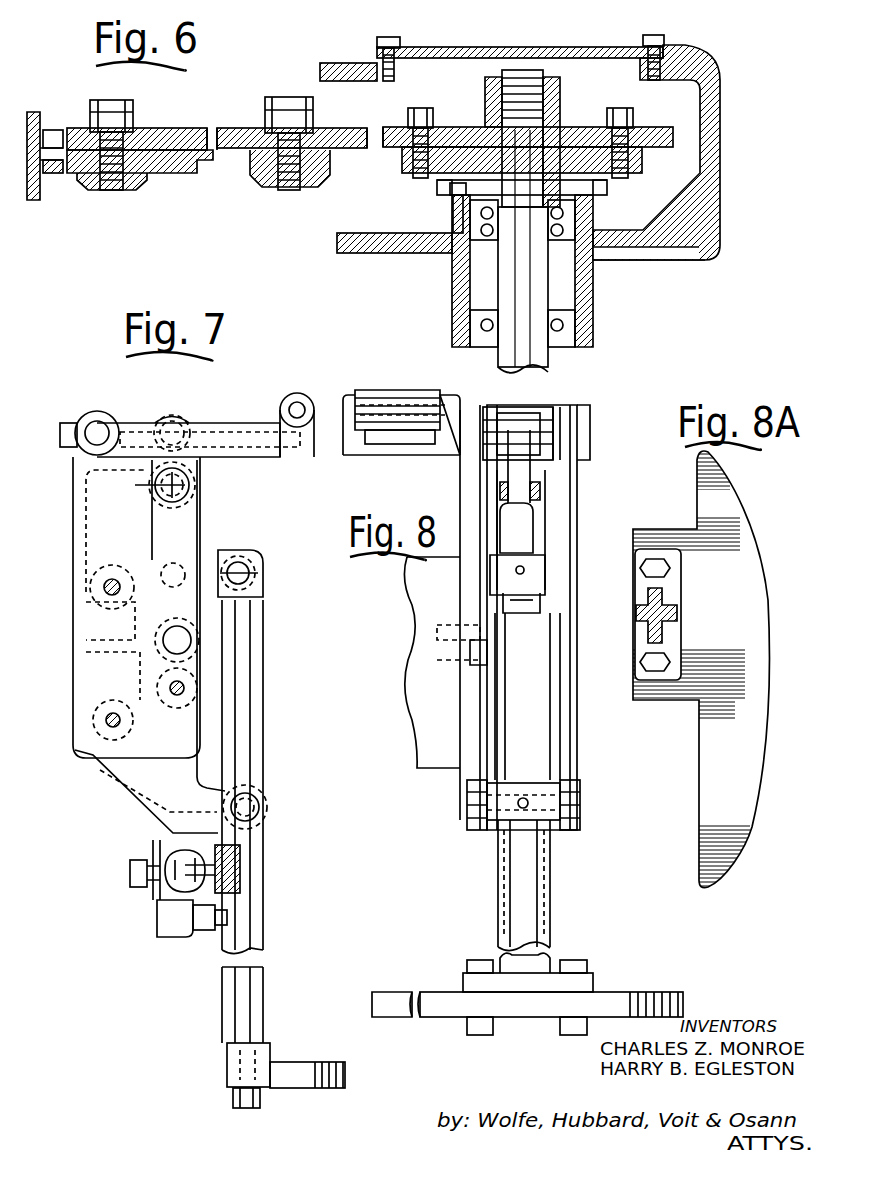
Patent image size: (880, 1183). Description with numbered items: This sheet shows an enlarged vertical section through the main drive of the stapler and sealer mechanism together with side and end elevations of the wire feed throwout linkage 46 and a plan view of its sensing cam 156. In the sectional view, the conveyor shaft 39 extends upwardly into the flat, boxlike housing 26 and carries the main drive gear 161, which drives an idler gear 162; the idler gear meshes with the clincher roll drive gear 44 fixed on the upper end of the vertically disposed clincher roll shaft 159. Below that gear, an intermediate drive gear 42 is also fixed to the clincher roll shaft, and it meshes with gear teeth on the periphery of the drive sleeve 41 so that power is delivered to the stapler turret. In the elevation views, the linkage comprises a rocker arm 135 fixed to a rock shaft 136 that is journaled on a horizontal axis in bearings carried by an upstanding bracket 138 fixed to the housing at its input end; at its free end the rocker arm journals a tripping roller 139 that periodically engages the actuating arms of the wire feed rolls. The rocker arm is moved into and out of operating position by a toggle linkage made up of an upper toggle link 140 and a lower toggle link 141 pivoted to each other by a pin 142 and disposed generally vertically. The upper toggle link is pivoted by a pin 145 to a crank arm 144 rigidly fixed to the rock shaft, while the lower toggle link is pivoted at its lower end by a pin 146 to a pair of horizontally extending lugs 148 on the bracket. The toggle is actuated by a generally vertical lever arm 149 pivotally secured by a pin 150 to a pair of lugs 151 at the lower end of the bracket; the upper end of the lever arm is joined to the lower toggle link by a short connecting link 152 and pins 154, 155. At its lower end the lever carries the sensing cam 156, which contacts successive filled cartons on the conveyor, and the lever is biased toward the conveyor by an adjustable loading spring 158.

In FIG. 8, the housing 26 is at (420, 744).
In FIG. 6, the shaft 39 is at (522, 72).
In FIG. 6, the drive sleeve 41 is at (33, 212).
In FIG. 6, the intermediate drive gear 42 is at (176, 173).
In FIG. 6, the clincher roll drive gear 44 is at (166, 128).
In FIG. 7, the wire feed throwout linkage 46 is at (66, 521).
In FIG. 8, the wire feed throwout linkage 46 is at (588, 522).
In FIG. 7, the rocker arm 135 is at (252, 458).
In FIG. 8, the rocker arm 135 is at (368, 456).
In FIG. 7, the rock shaft 136 is at (100, 428).
In FIG. 8, the rock shaft 136 is at (460, 438).
In FIG. 7, the bracket 138 is at (77, 547).
In FIG. 8, the bracket 138 is at (575, 540).
In FIG. 7, the tripping roller 139 is at (292, 393).
In FIG. 8, the tripping roller 139 is at (377, 392).
In FIG. 7, the upper toggle link 140 is at (191, 467).
In FIG. 8, the upper toggle link 140 is at (522, 455).
In FIG. 7, the lower toggle link 141 is at (195, 524).
In FIG. 8, the lower toggle link 141 is at (547, 506).
In FIG. 7, the pin 142 is at (187, 492).
In FIG. 8, the pin 142 is at (505, 498).
In FIG. 8, the crank arm 144 is at (547, 417).
In FIG. 7, the pin 145 is at (180, 440).
In FIG. 8, the pin 145 is at (575, 416).
In FIG. 7, the pin 146 is at (190, 640).
In FIG. 8, the pin 146 is at (480, 652).
In FIG. 7, the lugs 148 is at (122, 668).
In FIG. 8, the lugs 148 is at (480, 627).
In FIG. 7, the lever arm 149 is at (264, 752).
In FIG. 8, the lever arm 149 is at (546, 903).
In FIG. 8A, the lever arm 149 is at (682, 610).
In FIG. 7, the pin 150 is at (258, 803).
In FIG. 8, the pin 150 is at (565, 797).
In FIG. 7, the lugs 151 is at (268, 814).
In FIG. 8, the lugs 151 is at (476, 830).
In FIG. 7, the connecting link 152 is at (235, 555).
In FIG. 8, the connecting link 152 is at (520, 555).
In FIG. 7, the pin 154 is at (160, 572).
In FIG. 7, the pin 155 is at (256, 574).
In FIG. 8, the pin 155 is at (545, 593).
In FIG. 7, the sensing cam 156 is at (313, 1062).
In FIG. 8, the sensing cam 156 is at (432, 992).
In FIG. 8A, the sensing cam 156 is at (744, 840).
In FIG. 7, the loading spring 158 is at (165, 905).
In FIG. 6, the clincher roll shaft 159 is at (108, 192).
In FIG. 6, the main drive gear 161 is at (393, 127).
In FIG. 6, the idler gear 162 is at (233, 132).